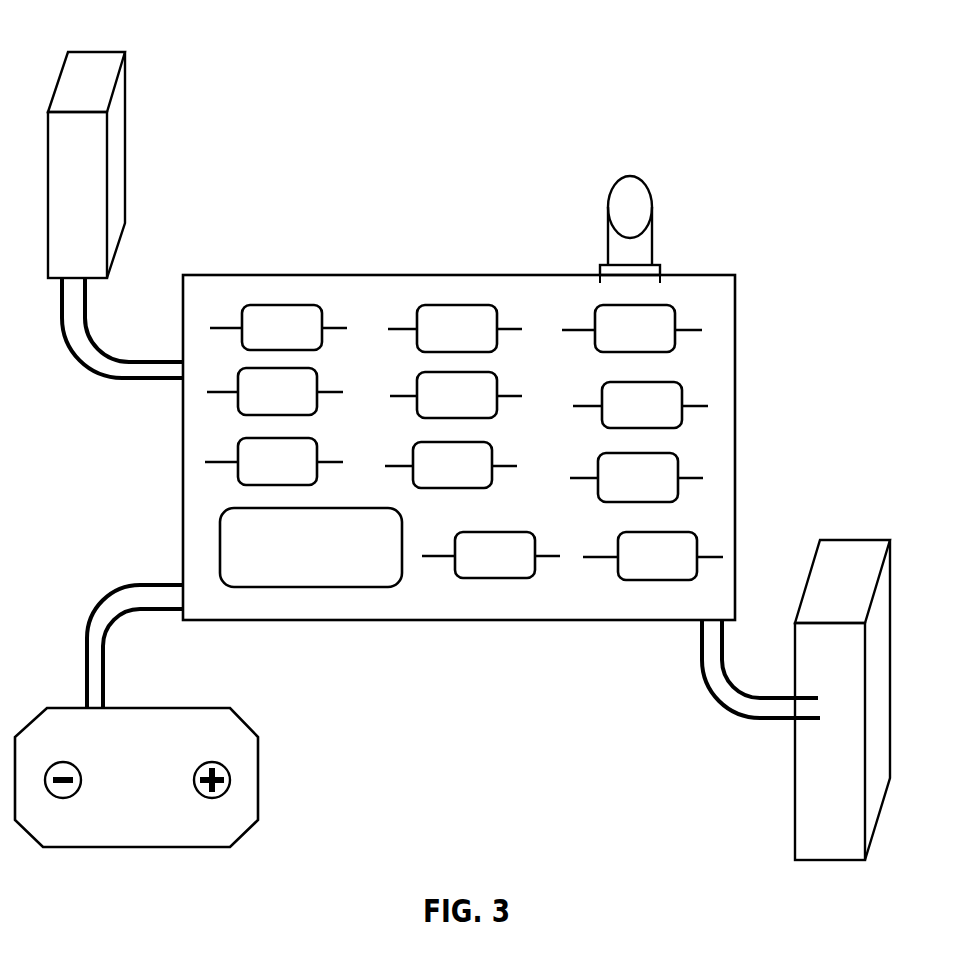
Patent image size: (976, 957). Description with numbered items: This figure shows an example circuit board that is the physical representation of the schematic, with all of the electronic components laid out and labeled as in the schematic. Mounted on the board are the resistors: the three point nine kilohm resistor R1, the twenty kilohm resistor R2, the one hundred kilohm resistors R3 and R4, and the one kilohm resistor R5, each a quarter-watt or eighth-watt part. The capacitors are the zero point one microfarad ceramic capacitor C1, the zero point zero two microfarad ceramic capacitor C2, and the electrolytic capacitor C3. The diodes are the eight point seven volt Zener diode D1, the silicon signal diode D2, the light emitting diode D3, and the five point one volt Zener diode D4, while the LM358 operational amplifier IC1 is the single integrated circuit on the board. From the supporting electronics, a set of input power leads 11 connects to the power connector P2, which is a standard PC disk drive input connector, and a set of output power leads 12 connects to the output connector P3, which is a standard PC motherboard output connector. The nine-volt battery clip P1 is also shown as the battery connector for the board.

The standard output PC motherboard connector P3 is at (270, 163).
The output power leads 12 is at (90, 346).
The light emitting diode D3 is at (650, 227).
The 100K resistor R3 is at (278, 327).
The 8.7 Volt Zener diode D1 is at (455, 328).
The 0.1 microfarad ceramic capacitor C1 is at (632, 328).
The silicon signal diode D2 is at (275, 391).
The 20K resistor R2 is at (456, 395).
The electrolytic capacitor C3 is at (640, 405).
The 100K resistor R4 is at (274, 461).
The 3.9K resistor R1 is at (451, 465).
The 0.02 microfarad ceramic capacitor C2 is at (636, 477).
The LM358 operational amplifier IC1 is at (311, 547).
The 5.1 Volt Zener diode D4 is at (491, 555).
The 1K resistor R5 is at (653, 556).
The input power leads 11 is at (715, 675).
The 9 Volt battery clip P1 is at (136, 805).
The standard PC disk power input connector P2 is at (662, 700).